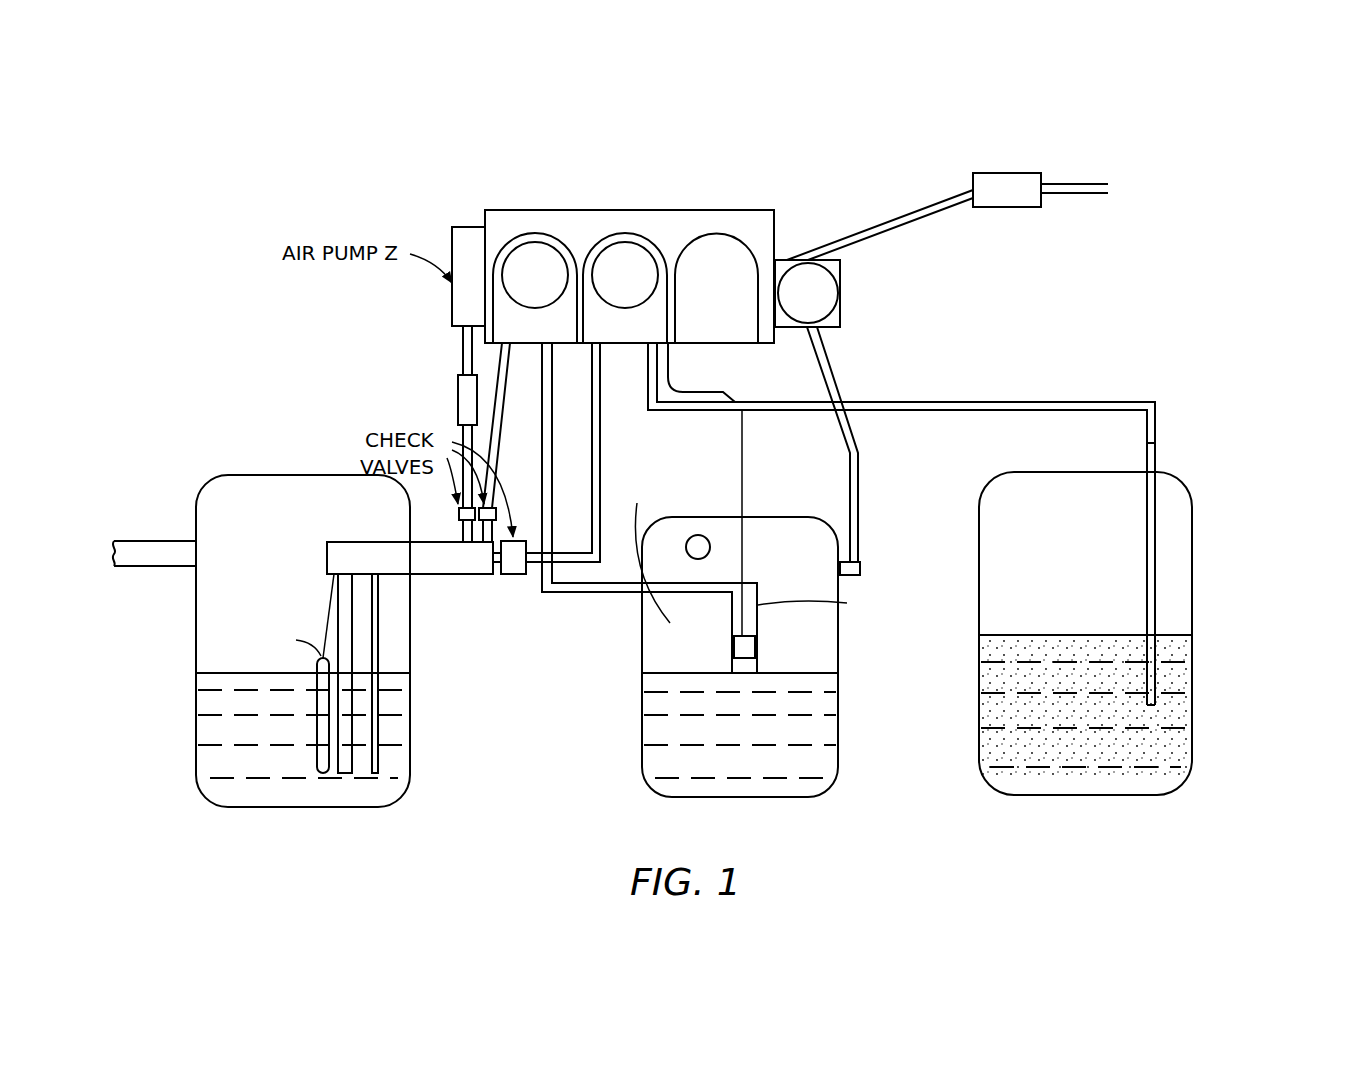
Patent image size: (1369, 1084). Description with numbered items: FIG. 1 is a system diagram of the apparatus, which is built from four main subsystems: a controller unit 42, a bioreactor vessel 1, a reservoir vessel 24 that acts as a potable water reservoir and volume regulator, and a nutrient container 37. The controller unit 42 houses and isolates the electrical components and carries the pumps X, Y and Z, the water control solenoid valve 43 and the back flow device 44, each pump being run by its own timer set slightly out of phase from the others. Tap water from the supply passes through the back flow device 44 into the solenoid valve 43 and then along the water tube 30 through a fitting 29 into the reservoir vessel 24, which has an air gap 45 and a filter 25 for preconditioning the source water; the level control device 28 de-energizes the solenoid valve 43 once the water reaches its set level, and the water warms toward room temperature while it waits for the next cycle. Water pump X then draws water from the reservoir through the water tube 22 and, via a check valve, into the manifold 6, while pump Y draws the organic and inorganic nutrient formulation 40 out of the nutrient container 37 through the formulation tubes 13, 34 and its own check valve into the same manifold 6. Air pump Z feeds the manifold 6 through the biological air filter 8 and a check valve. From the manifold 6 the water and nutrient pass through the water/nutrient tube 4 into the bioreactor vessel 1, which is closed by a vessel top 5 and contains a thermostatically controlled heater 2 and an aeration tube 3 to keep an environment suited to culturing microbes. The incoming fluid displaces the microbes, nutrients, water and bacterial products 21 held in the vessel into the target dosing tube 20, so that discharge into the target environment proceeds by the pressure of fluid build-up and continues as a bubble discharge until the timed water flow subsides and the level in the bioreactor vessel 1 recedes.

The bioreactor vessel 1 is at (194, 640).
The thermostatically controlled heater 2 is at (312, 742).
The aeration tube 3 is at (382, 746).
The water/nutrient tube/pipe 4 is at (357, 659).
The vessel top 5 is at (297, 473).
The manifold 6 is at (437, 578).
The biological air filter 8 is at (458, 412).
The formulation tube/pipe 13 is at (1003, 398).
The formulation tube/pipe 34 is at (901, 524).
The target dosing tube/pipe 20 is at (155, 541).
The microbes, organic and inorganic nutrients, water and bacterial products 21 is at (196, 715).
The water tube/pipe 22 is at (590, 593).
The reservoir vessel 24 is at (714, 799).
The filter 25 is at (783, 765).
The level control device 28 is at (753, 647).
The fitting 29 is at (860, 567).
The water tube/pipe from solenoid 30 is at (857, 510).
The nutrient container 37 is at (1196, 574).
The organic and inorganic nutrient formulation 40 is at (1173, 670).
The controller unit 42 is at (675, 210).
The water control solenoid valve 43 is at (844, 303).
The back flow device 44 is at (988, 170).
The air gap 45 is at (706, 540).